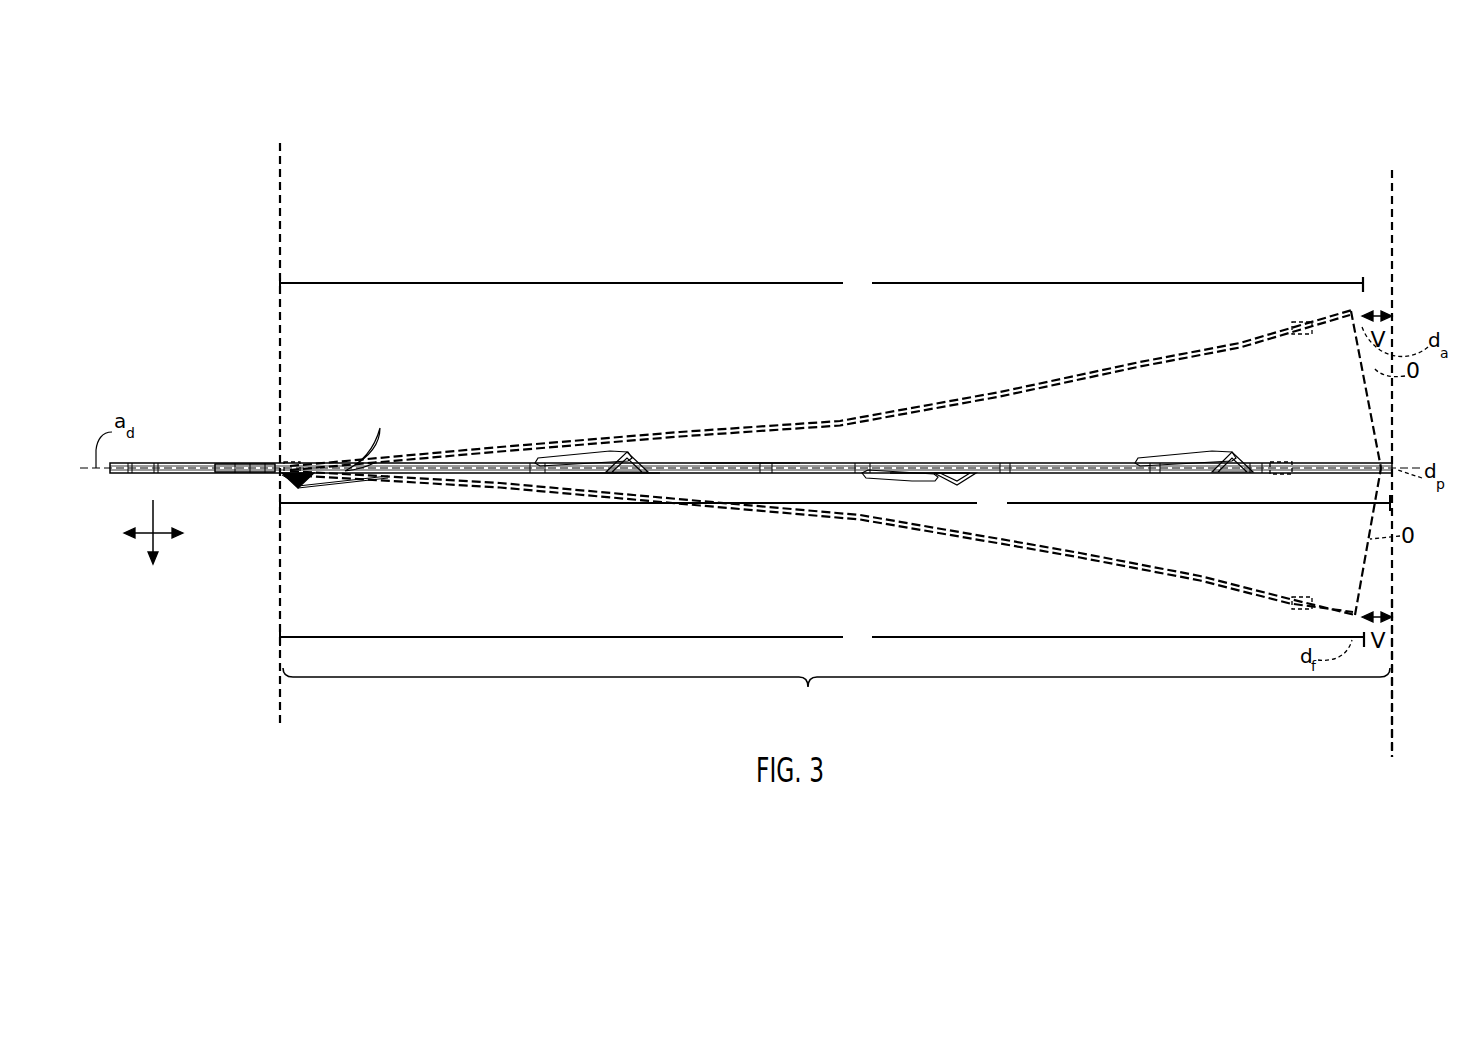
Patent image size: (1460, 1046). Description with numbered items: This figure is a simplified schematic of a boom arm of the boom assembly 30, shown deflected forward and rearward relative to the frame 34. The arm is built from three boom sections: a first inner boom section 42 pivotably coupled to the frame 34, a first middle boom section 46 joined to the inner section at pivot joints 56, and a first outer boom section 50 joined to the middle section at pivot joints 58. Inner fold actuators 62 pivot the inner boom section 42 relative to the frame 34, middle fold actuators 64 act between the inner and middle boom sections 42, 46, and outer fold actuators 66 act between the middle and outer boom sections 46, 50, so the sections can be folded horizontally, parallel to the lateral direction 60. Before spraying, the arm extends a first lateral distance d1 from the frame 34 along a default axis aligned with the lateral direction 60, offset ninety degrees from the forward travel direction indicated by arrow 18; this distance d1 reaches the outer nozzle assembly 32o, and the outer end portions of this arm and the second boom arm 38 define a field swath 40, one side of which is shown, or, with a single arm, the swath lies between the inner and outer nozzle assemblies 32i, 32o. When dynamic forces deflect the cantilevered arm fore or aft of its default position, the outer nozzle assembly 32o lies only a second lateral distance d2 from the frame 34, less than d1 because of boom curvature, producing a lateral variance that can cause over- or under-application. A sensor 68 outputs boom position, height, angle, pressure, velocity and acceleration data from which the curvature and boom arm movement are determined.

The arrow 18 is at (154, 544).
The boom assembly 30 is at (200, 430).
The inner nozzle assembly 32i is at (369, 437).
The outer nozzle assembly 32o is at (1351, 305).
The frame 34 is at (197, 474).
The second boom arm 38 is at (836, 693).
The field swath 40 is at (1395, 723).
The first inner boom section 42 is at (418, 462).
The first middle boom section 46 is at (747, 466).
The first outer boom section 50 is at (1075, 466).
The pivot joints 56 is at (598, 473).
The pivot joints 58 is at (930, 478).
The lateral direction 60 is at (162, 530).
The inner fold actuators 62 is at (220, 463).
The middle fold actuators 64 is at (568, 452).
The outer fold actuators 66 is at (900, 472).
The sensor 68 is at (289, 460).
The first lateral distance d1 is at (835, 503).
The second lateral distance d2 is at (822, 461).